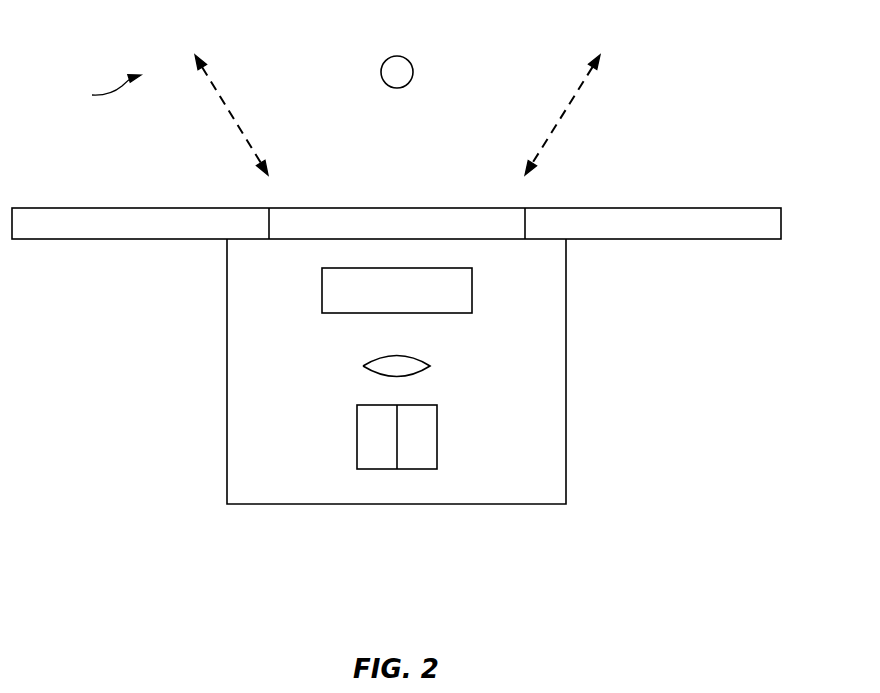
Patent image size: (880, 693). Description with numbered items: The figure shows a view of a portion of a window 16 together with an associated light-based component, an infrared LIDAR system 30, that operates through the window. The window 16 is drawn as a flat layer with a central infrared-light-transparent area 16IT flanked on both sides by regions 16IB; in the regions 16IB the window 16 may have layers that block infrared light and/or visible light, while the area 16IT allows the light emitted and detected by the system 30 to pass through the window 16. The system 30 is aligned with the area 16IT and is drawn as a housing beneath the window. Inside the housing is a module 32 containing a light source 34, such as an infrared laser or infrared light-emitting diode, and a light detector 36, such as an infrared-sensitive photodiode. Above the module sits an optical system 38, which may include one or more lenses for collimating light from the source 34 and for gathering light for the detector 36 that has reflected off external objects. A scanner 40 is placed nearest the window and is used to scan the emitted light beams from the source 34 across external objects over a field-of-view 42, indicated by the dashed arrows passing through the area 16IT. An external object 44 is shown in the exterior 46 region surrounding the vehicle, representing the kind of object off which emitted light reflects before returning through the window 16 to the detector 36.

The window 16 is at (788, 200).
The regions 16IB is at (128, 212).
The infrared-light-transparent area 16IT is at (400, 212).
The system 30 is at (583, 243).
The light source and detector module 32 is at (451, 438).
The light source 34 is at (378, 458).
The light detector 36 is at (415, 458).
The optical system 38 is at (430, 366).
The scanner 40 is at (472, 292).
The field-of-view 42 is at (226, 110).
The object 44 is at (413, 70).
The exterior 46 is at (104, 90).